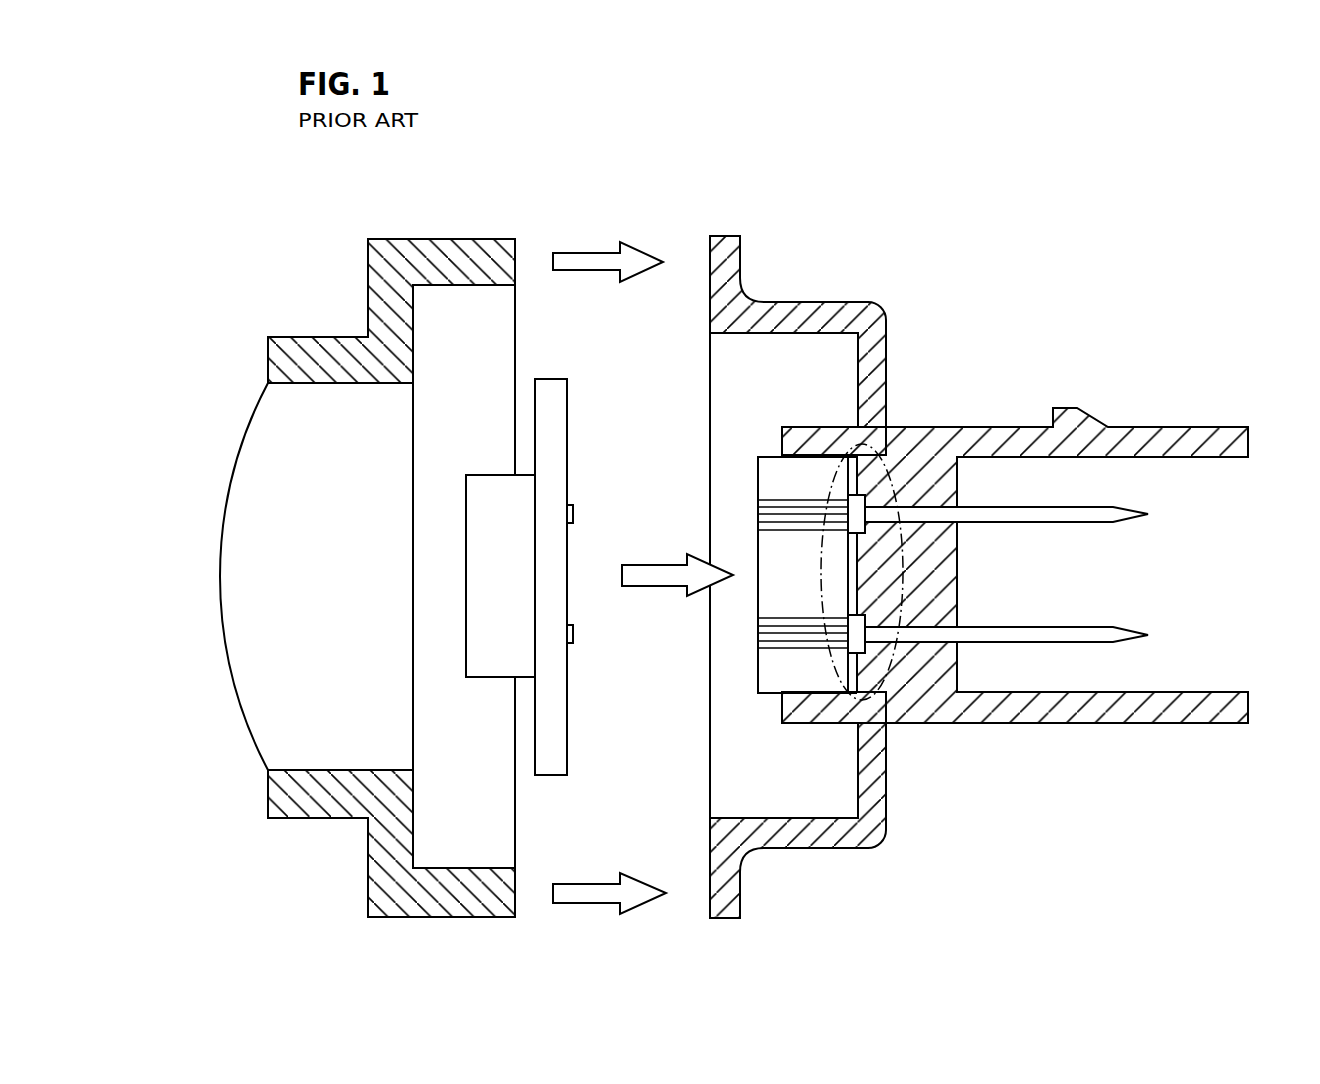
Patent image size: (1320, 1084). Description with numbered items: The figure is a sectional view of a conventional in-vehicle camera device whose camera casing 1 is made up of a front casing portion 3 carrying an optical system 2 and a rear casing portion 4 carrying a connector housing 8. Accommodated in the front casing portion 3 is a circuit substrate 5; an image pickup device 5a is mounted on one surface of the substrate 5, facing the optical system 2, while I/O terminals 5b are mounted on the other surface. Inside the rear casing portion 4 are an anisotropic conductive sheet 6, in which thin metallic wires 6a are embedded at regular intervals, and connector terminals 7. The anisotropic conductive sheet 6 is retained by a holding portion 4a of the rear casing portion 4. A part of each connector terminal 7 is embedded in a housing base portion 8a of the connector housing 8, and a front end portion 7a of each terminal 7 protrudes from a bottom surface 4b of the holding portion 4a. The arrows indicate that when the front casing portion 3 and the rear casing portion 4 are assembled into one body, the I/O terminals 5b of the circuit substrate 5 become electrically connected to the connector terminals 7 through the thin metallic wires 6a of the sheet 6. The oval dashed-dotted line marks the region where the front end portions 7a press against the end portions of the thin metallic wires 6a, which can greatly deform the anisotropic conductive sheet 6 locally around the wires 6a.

The camera casing 1 is at (712, 138).
The optical system 2 is at (220, 565).
The front casing portion 3 is at (495, 239).
The rear casing portion 4 is at (724, 236).
The holding portion 4a is at (822, 438).
The bottom surface 4b is at (870, 715).
The circuit substrate 5 is at (567, 436).
The image pickup device 5a is at (467, 575).
The I/O terminals 5b is at (574, 514).
The anisotropic conductive sheet 6 is at (758, 662).
The thin metallic wires 6a is at (790, 503).
The connector terminals 7 is at (1022, 627).
The front end portion 7a is at (856, 492).
The connector housing 8 is at (1100, 713).
The housing base portion 8a is at (940, 677).